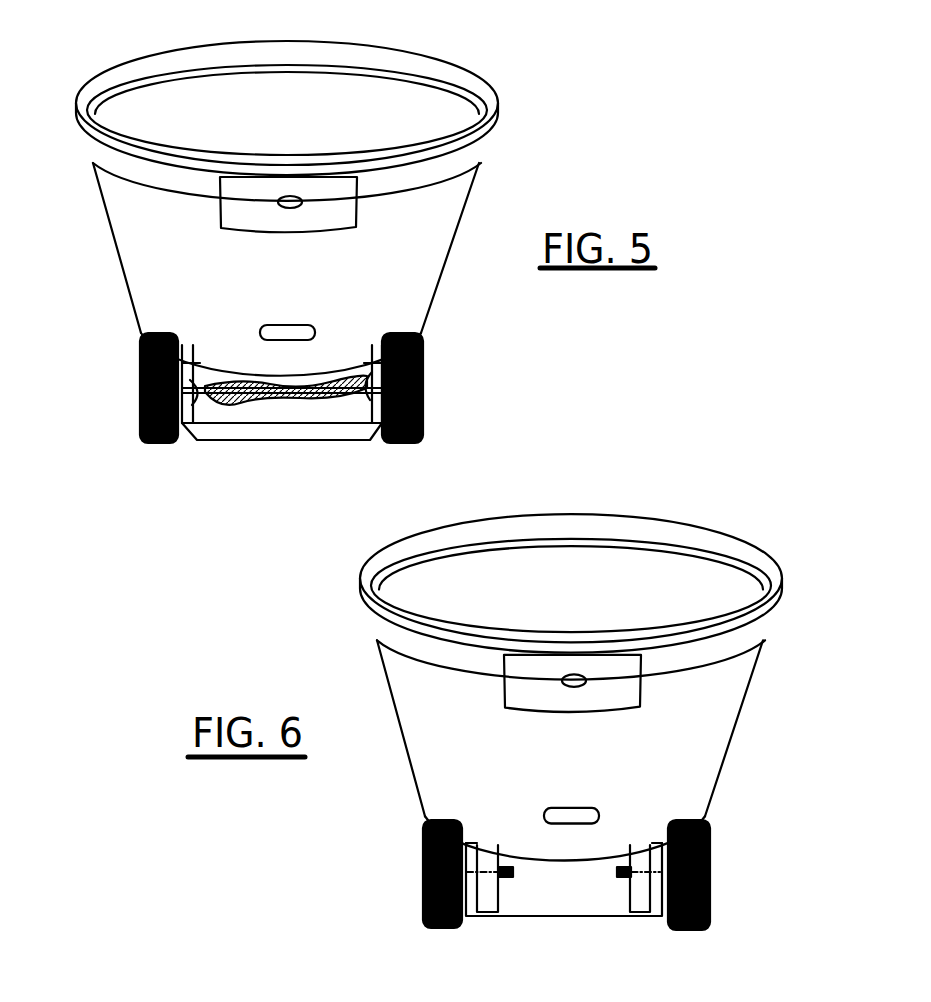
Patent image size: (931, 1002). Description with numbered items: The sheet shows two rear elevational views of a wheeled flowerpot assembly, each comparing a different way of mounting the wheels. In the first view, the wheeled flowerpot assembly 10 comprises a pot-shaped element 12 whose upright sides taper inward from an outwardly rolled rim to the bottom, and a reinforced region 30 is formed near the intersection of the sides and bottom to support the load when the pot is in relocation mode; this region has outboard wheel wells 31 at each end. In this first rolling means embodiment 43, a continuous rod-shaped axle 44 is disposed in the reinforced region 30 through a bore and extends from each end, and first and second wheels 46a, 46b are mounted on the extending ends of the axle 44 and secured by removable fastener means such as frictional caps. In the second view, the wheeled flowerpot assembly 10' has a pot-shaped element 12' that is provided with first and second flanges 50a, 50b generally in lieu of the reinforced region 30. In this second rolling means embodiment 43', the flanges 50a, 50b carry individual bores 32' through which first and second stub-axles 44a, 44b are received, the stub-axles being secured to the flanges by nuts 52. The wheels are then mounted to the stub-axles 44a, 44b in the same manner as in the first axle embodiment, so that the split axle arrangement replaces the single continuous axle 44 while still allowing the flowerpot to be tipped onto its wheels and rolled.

In FIG. 5, the wheeled flowerpot assembly 10 is at (317, 92).
In FIG. 5, the pot-shaped element 12 is at (292, 269).
In FIG. 5, the rolling means embodiment 43 is at (206, 392).
In FIG. 5, the first wheel 46a is at (142, 441).
In FIG. 5, the second wheel 46b is at (424, 438).
In FIG. 5, the reinforced region 30 is at (223, 413).
In FIG. 5, the outboard wheel wells 31 is at (192, 420).
In FIG. 5, the continuous rod-shaped axle 44 is at (277, 392).
In FIG. 6, the wheeled flowerpot assembly 10' is at (574, 576).
In FIG. 6, the pot-shaped element 12' is at (587, 750).
In FIG. 6, the second rolling means embodiment 43' is at (482, 879).
In FIG. 6, the first stub-axle 44a is at (465, 920).
In FIG. 6, the second stub-axle 44b is at (668, 920).
In FIG. 6, the individual bores 32' is at (563, 919).
In FIG. 6, the first flange 50a is at (490, 900).
In FIG. 6, the second flange 50b is at (638, 903).
In FIG. 6, the nuts 52 is at (641, 880).